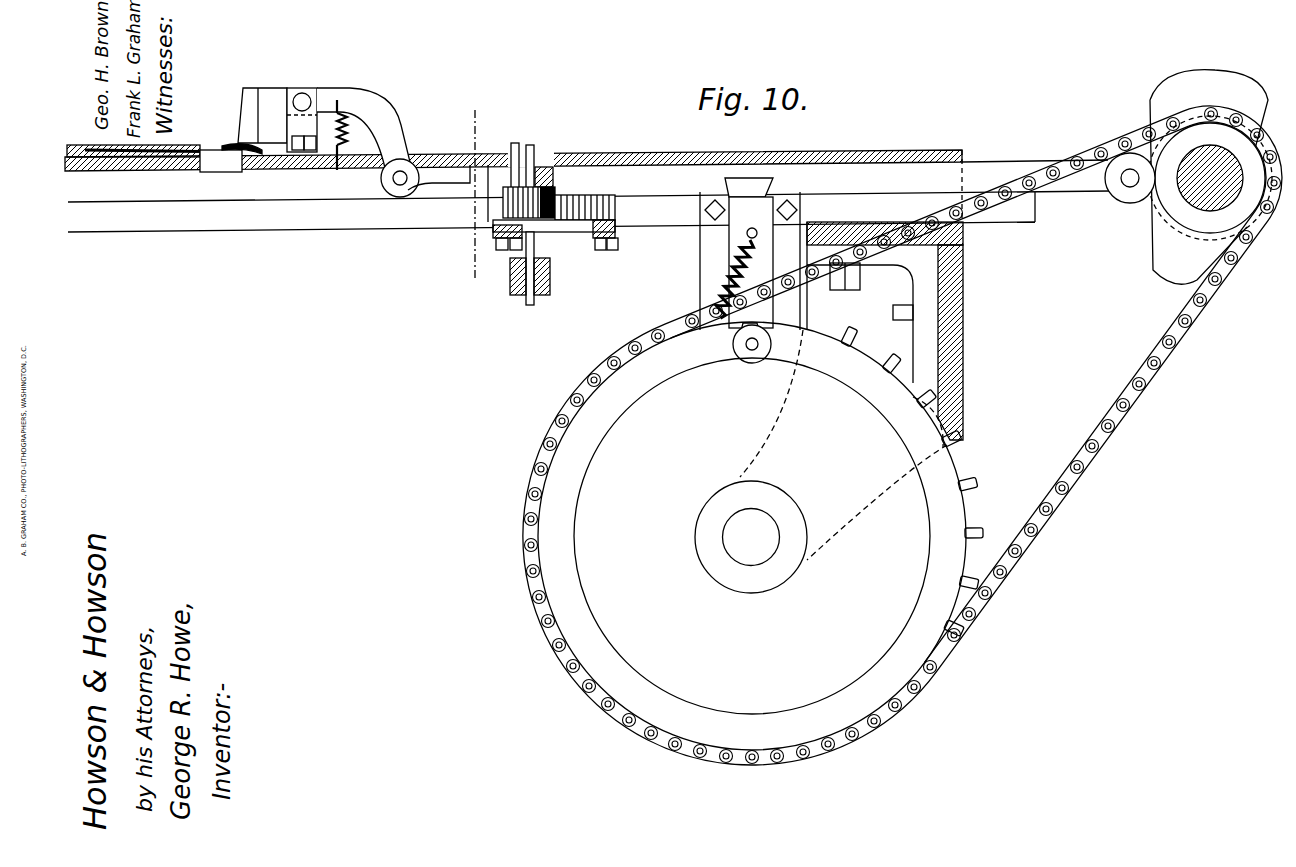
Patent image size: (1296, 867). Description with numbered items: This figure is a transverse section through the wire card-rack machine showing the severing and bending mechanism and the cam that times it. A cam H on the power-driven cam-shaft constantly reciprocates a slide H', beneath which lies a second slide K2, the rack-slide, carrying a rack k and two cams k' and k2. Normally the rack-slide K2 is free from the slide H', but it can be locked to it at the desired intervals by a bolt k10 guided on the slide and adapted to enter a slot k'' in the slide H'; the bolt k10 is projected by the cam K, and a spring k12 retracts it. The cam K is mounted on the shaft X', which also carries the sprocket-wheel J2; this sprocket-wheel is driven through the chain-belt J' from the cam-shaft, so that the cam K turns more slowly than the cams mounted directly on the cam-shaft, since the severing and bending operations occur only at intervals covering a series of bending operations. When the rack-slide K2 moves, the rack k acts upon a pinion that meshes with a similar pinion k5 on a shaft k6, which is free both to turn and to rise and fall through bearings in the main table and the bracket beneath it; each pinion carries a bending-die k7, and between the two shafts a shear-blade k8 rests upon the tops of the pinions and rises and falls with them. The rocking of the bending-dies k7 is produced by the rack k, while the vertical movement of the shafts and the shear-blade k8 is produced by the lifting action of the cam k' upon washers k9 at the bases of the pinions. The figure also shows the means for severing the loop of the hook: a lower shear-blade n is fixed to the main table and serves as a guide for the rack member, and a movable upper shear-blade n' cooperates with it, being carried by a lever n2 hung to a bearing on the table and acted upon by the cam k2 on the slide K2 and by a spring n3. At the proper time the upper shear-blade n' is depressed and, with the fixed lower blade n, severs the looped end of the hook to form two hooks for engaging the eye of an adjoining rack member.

The lower shear-blade n is at (277, 120).
The upper shear-blade n' is at (233, 135).
The lever n2 is at (368, 142).
The spring n3 is at (350, 135).
The rack k is at (585, 197).
The cam k' is at (555, 249).
The cam k2 is at (432, 184).
The pinion k5 is at (503, 203).
The shaft k6 is at (530, 147).
The bending-die k7 is at (515, 143).
The shear-blade k8 is at (546, 168).
The washers k9 is at (540, 236).
The bolt k10 is at (752, 312).
The slot k'' is at (749, 228).
The spring k12 is at (728, 282).
The cam H is at (1188, 177).
The slide H' is at (798, 186).
The cam K is at (752, 536).
The rack-slide K2 is at (870, 207).
The chain-belt J' is at (902, 435).
The sprocket-wheel J2 is at (919, 481).
The shaft X' is at (751, 537).